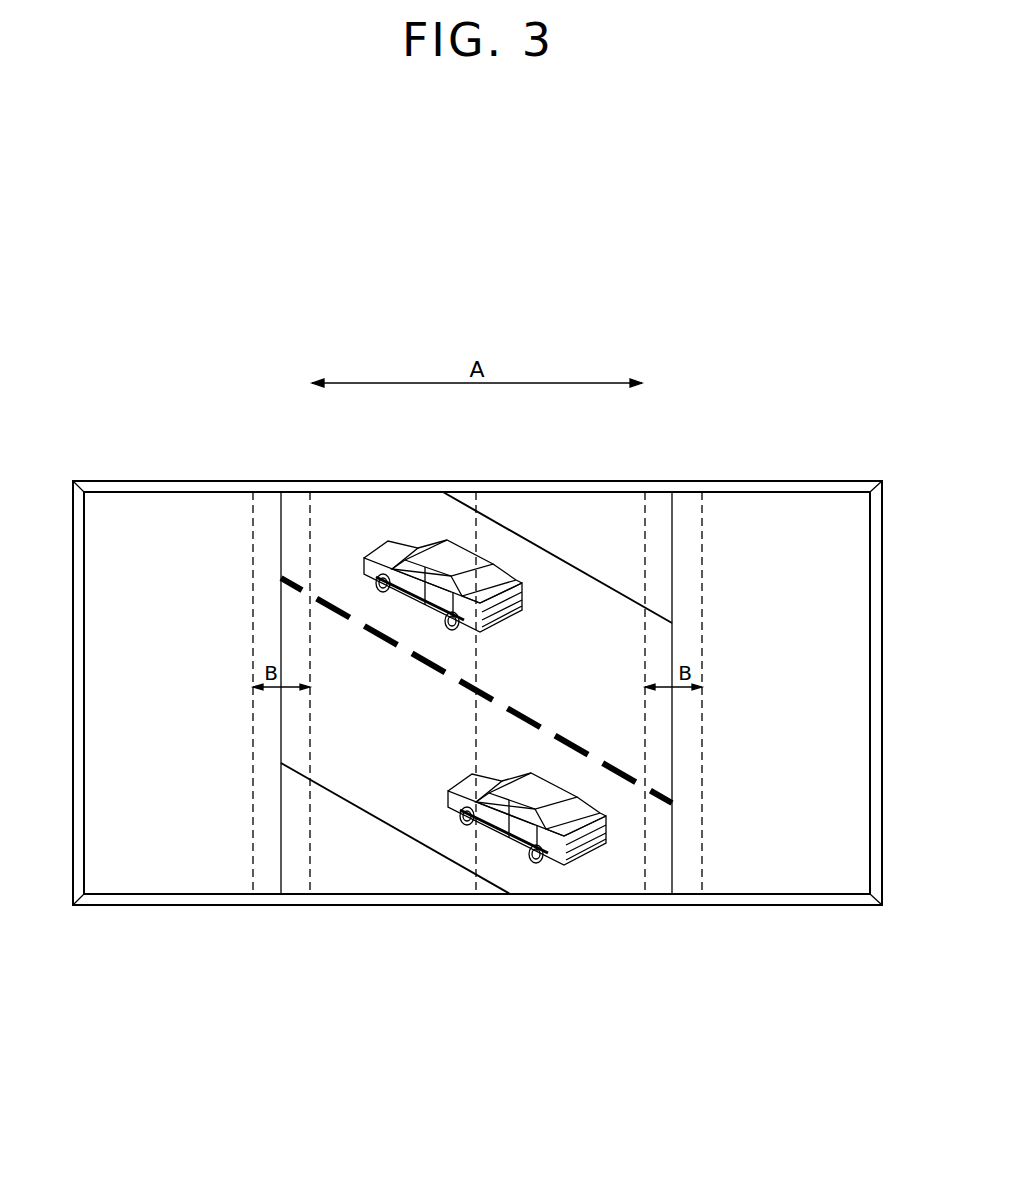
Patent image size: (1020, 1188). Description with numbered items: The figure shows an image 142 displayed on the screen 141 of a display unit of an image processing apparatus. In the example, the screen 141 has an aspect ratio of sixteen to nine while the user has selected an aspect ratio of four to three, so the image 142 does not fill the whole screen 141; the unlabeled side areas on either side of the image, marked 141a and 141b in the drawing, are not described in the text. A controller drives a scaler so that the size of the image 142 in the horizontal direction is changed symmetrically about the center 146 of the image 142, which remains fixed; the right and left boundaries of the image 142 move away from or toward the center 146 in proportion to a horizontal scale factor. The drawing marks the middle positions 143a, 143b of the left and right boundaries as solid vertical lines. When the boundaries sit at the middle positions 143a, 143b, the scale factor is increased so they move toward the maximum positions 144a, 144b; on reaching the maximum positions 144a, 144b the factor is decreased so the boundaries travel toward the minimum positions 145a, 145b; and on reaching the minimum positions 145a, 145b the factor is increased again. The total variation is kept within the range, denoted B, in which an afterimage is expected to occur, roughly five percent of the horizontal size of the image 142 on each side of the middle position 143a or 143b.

The screen 141 is at (738, 322).
The first (left) display region 141a is at (170, 503).
The second (right) display region 141b is at (766, 503).
The image 142 is at (520, 883).
The middle position 143a is at (284, 906).
The middle position 143b is at (676, 906).
The maximum position 144a is at (252, 906).
The maximum position 144b is at (703, 906).
The minimum position 145a is at (312, 906).
The minimum position 145b is at (641, 906).
The center 146 is at (478, 522).